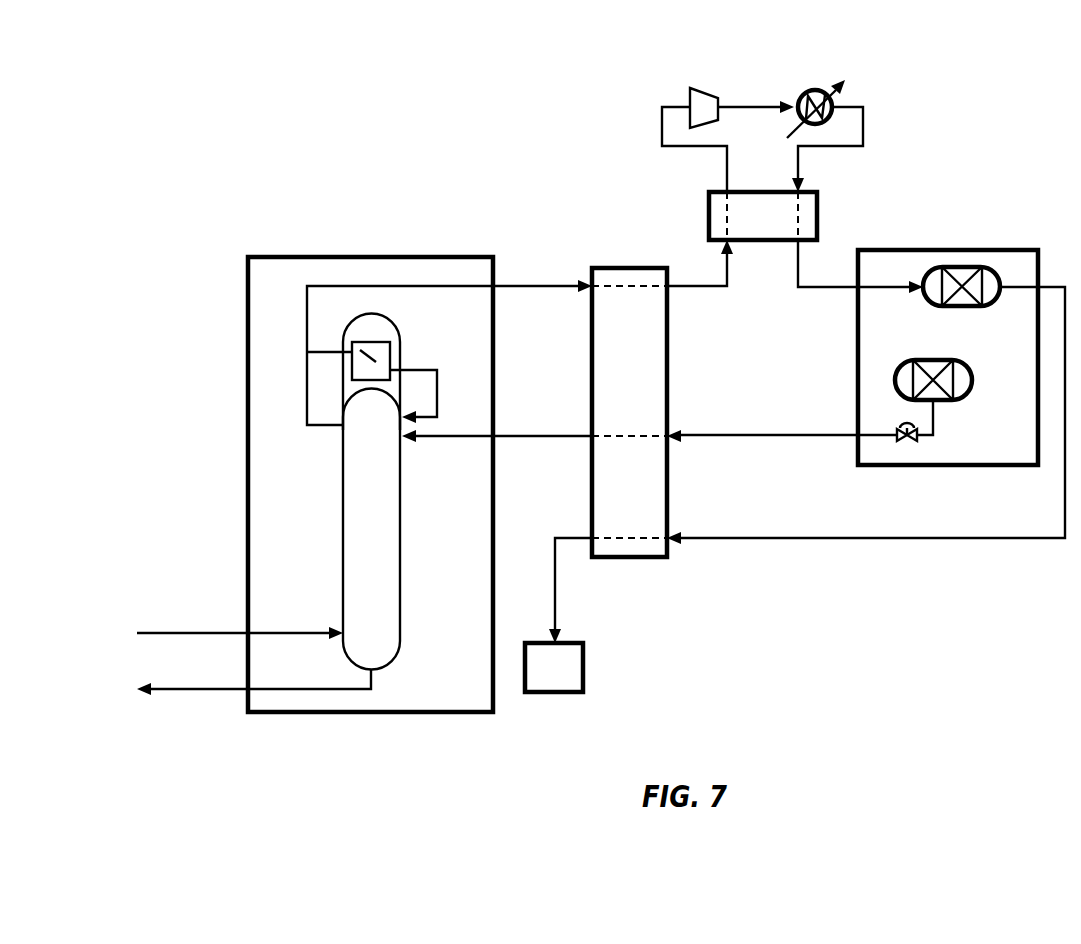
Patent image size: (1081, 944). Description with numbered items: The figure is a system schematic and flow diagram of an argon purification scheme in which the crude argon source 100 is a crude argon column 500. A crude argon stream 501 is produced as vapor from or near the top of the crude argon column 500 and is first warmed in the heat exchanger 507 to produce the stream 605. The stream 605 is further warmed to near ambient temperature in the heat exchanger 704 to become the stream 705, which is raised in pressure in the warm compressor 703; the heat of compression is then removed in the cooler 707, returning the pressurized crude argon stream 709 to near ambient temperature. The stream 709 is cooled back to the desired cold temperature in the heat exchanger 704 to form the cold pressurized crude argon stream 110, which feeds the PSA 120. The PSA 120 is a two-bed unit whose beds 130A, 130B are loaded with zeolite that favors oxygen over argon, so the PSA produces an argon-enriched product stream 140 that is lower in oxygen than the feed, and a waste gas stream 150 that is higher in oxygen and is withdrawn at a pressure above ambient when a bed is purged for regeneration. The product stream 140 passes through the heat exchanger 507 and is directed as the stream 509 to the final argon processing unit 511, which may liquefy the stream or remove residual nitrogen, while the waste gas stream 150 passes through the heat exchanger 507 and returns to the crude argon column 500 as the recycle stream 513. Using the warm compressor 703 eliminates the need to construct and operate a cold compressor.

The crude argon source 100 is at (248, 350).
The cold pressurized crude argon stream 110 is at (810, 290).
The PSA 120 is at (975, 250).
The PSA bed 130A is at (967, 306).
The PSA bed 130B is at (931, 334).
The argon-enriched product stream 140 is at (996, 513).
The waste gas stream 150 is at (768, 440).
The crude argon column 500 is at (343, 500).
The crude argon stream 501 is at (455, 288).
The heat exchanger 507 is at (622, 268).
The stream 509 is at (555, 560).
The final argon processing unit 511 is at (583, 668).
The recycle stream 513 is at (536, 440).
The stream 605 is at (705, 290).
The warm compressor 703 is at (689, 99).
The heat exchanger 704 is at (709, 216).
The stream 705 is at (681, 146).
The cooler 707 is at (801, 93).
The pressurized crude argon stream 709 is at (840, 146).